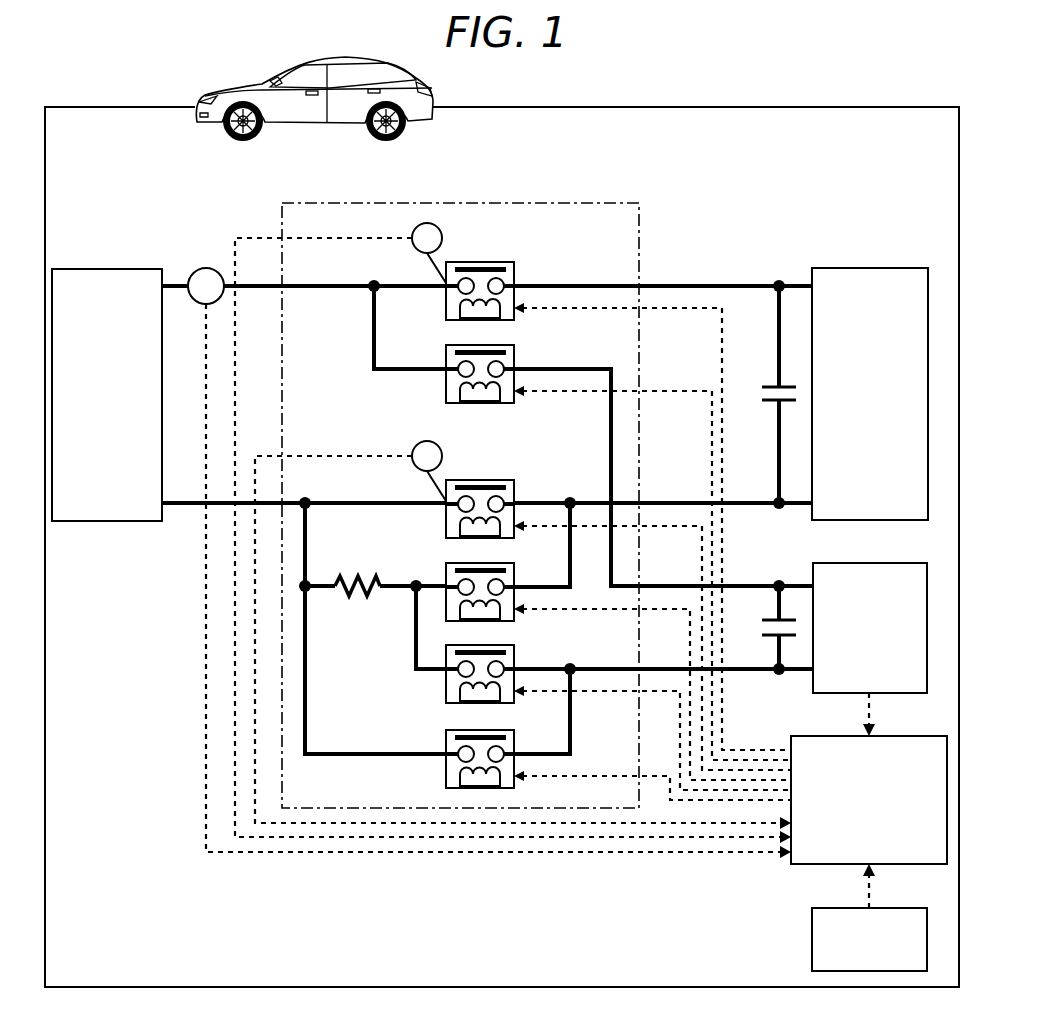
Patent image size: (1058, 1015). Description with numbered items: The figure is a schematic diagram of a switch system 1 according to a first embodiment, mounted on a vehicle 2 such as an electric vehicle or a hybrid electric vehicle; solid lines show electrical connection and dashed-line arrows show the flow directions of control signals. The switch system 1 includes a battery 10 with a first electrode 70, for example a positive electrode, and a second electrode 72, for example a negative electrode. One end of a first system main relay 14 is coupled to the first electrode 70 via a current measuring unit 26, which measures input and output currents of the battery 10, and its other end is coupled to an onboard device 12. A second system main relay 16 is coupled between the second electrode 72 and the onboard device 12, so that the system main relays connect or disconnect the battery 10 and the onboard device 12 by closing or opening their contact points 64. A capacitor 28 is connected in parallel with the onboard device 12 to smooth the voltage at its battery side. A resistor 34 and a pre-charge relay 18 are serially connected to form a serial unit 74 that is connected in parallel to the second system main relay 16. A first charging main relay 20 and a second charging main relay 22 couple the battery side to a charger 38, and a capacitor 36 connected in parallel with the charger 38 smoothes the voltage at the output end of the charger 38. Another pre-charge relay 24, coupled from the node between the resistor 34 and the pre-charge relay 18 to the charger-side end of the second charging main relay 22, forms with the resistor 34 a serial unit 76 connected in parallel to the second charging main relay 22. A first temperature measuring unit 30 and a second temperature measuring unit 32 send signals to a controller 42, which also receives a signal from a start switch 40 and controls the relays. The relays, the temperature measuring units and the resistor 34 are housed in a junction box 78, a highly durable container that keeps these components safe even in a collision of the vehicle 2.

The switch system 1 is at (650, 178).
The vehicle 2 is at (148, 107).
The battery 10 is at (116, 269).
The onboard device 12 is at (868, 268).
The first system main relay 14 is at (514, 263).
The second system main relay 16 is at (514, 480).
The pre-charge relay 18 is at (514, 563).
The first charging main relay 20 is at (514, 346).
The second charging main relay 22 is at (514, 730).
The pre-charge relay 24 is at (514, 645).
The current measuring unit 26 is at (206, 268).
The capacitor 28 is at (762, 387).
The first temperature measuring unit 30 is at (411, 234).
The second temperature measuring unit 32 is at (411, 454).
The resistor 34 is at (357, 600).
The capacitor 36 is at (762, 620).
The charger 38 is at (913, 563).
The start switch 40 is at (913, 908).
The controller 42 is at (913, 736).
The contact points 64 is at (460, 294).
The first electrode 70 is at (165, 280).
The second electrode 72 is at (168, 522).
The serial unit 74 is at (368, 546).
The serial unit 76 is at (368, 697).
The junction box 78 is at (492, 203).